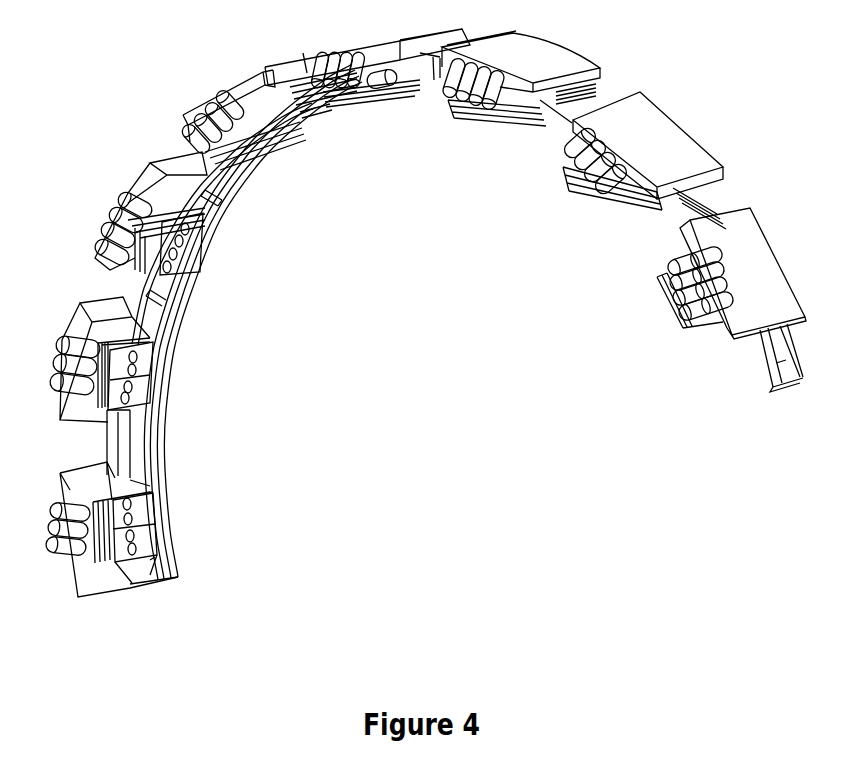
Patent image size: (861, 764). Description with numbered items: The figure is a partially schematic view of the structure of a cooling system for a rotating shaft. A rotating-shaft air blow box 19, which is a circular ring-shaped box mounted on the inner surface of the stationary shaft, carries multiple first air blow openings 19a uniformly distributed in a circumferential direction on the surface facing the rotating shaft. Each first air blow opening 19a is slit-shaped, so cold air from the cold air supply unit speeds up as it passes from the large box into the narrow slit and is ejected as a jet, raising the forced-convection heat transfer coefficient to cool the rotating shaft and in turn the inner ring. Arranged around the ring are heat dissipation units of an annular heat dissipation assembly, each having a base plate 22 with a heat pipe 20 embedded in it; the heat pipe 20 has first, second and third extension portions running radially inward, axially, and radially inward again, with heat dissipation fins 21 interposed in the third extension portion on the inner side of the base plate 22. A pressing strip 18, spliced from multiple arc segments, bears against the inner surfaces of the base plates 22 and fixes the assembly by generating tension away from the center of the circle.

The pressing strip 18 is at (110, 453).
The rotating-shaft air blow box 19 is at (173, 337).
The first air blow openings 19a is at (232, 200).
The heat pipe 20 is at (600, 163).
The heat dissipation fins 21 is at (637, 188).
The base plate 22 is at (695, 160).